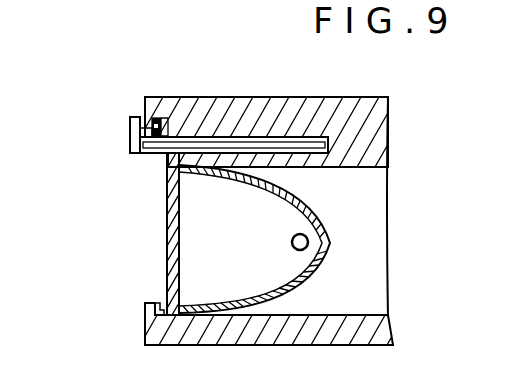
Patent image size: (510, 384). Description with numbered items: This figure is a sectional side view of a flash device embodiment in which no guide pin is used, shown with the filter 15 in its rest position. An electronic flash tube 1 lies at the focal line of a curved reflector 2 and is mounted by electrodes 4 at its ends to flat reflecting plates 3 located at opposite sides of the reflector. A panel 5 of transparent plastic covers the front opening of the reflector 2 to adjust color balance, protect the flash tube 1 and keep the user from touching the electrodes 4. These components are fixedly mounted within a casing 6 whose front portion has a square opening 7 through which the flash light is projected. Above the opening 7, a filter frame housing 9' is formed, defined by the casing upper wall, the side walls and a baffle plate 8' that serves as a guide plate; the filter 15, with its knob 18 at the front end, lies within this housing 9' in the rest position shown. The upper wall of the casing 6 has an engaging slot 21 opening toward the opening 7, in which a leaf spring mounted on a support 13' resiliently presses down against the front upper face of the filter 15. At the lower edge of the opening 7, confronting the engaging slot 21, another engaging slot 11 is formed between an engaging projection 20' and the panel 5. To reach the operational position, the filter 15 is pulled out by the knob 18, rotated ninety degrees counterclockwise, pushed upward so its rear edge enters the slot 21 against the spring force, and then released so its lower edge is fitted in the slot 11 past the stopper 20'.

The electronic flash tube 1 is at (322, 268).
The curved reflector 2 is at (330, 232).
The flat reflecting plates 3 is at (284, 268).
The electrodes 4 is at (309, 243).
The panel 5 is at (180, 235).
The casing 6 is at (335, 108).
The square opening 7 is at (158, 243).
The baffle plate 8' is at (278, 173).
The filter frame housing 9' is at (373, 132).
The engaging slot 11 is at (158, 316).
The support 13' is at (166, 89).
The filter 15 is at (268, 147).
The knob 18 is at (130, 134).
The engaging projection 20' is at (131, 310).
The engaging slot 21 is at (165, 118).